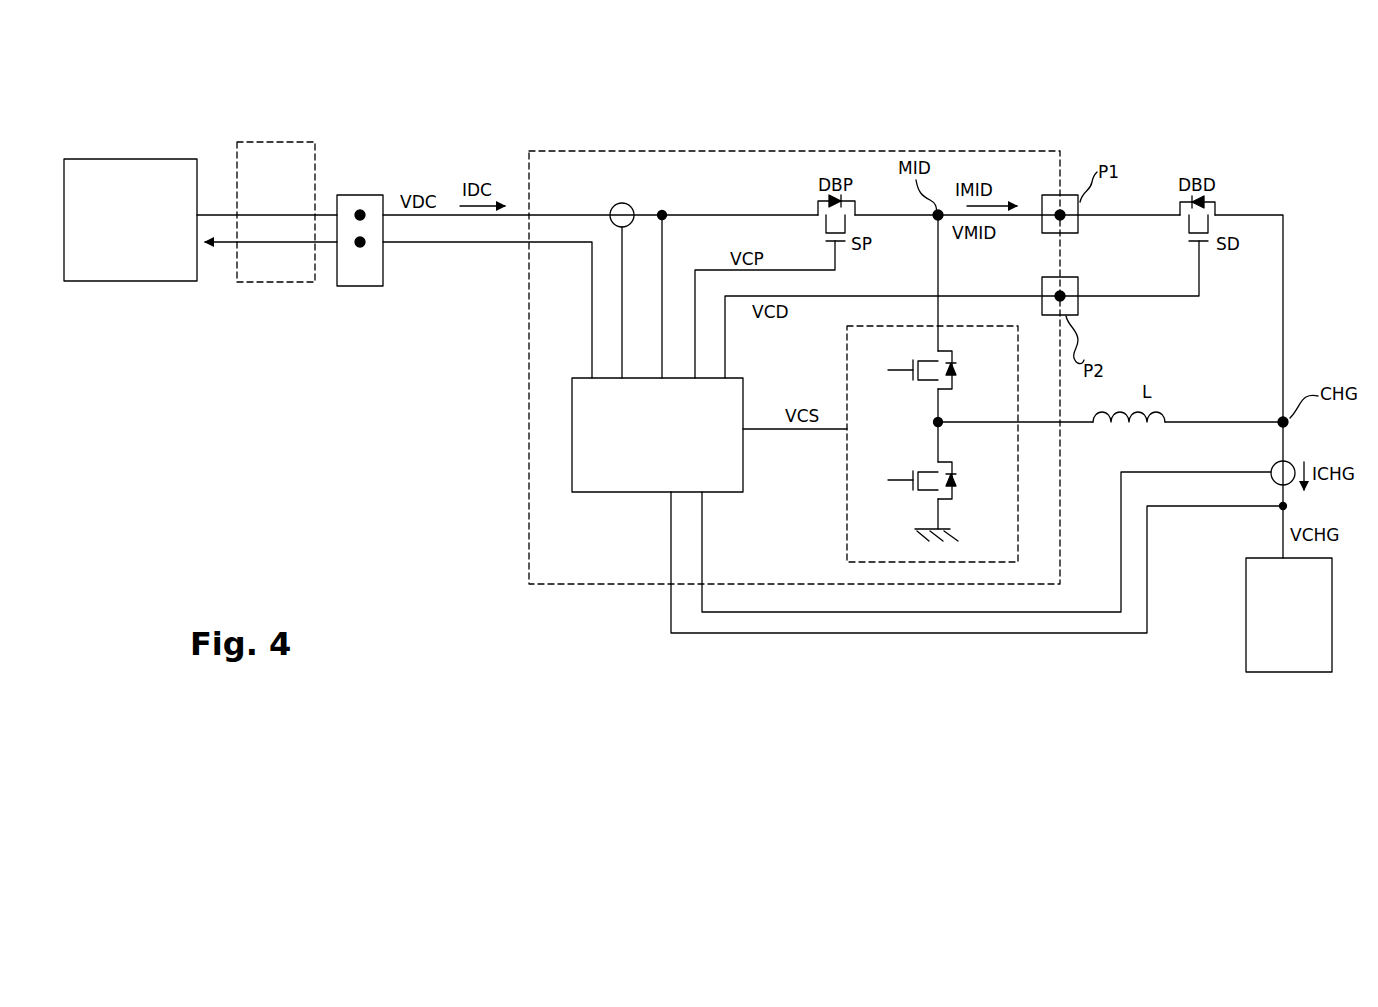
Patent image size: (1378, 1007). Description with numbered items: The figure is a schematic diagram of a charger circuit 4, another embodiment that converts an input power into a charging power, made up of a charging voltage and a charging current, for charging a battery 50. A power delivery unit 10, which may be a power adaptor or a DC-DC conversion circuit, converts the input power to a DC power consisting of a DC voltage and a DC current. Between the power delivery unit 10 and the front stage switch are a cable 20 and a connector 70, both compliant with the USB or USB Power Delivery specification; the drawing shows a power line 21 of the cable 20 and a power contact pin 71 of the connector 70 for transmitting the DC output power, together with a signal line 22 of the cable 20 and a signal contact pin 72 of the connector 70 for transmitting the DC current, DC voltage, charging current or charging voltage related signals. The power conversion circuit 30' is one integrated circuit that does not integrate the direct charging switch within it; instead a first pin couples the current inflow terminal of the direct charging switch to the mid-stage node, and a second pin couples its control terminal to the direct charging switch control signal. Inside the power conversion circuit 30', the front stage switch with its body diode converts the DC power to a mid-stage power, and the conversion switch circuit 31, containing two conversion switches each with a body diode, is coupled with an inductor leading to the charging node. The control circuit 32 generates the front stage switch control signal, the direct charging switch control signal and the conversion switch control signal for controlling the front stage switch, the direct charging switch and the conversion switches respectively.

The charger circuit 4 is at (528, 72).
The power delivery unit 10 is at (186, 270).
The cable 20 is at (286, 277).
The power line 21 is at (255, 215).
The signal line 22 is at (275, 242).
The connector 70 is at (371, 277).
The power contact pin 71 is at (362, 218).
The signal contact pin 72 is at (358, 246).
The power conversion circuit 30' is at (794, 367).
The conversion switch circuit 31 is at (1003, 554).
The control circuit 32 is at (668, 483).
The battery 50 is at (1300, 657).